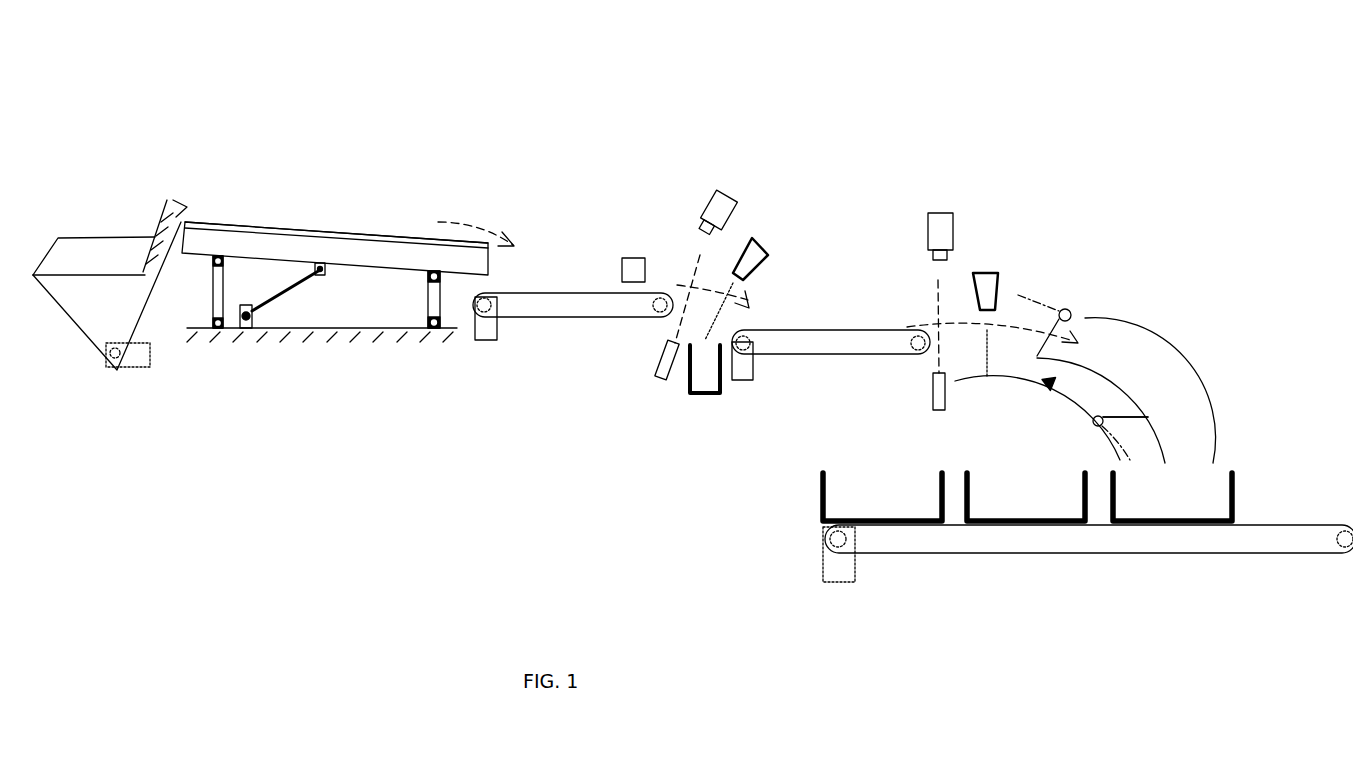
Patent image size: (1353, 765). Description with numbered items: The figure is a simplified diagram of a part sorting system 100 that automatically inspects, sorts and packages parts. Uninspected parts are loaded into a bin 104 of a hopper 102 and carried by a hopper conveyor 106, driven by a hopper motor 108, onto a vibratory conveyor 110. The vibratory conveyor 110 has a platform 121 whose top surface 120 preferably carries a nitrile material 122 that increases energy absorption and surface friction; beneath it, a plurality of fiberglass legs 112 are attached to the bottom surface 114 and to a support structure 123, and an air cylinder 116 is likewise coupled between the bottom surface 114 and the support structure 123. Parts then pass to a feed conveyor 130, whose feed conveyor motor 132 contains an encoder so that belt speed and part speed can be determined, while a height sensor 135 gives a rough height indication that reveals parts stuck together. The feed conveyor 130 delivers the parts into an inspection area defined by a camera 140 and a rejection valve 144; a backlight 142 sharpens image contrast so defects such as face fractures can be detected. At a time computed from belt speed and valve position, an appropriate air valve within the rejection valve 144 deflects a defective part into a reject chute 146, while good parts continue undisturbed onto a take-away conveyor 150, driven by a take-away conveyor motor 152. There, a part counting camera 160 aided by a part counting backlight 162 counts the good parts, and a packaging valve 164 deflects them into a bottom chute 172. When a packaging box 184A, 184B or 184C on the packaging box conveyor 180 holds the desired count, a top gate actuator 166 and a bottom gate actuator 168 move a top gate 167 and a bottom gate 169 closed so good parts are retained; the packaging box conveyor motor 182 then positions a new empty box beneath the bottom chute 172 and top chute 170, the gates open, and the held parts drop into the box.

The part sorting system 100 is at (846, 64).
The hopper 102 is at (108, 158).
The bin 104 is at (107, 232).
The hopper conveyor 106 is at (177, 212).
The hopper motor 108 is at (132, 367).
The vibratory conveyor 110 is at (250, 198).
The legs 112 is at (428, 322).
The bottom surface 114 is at (365, 273).
The air cylinder 116 is at (258, 303).
The top surface 120 is at (415, 237).
The platform 121 is at (203, 263).
The material 122 is at (365, 233).
The support structure 123 is at (247, 325).
The feed conveyor 130 is at (522, 282).
The feed conveyor motor 132 is at (480, 340).
The height sensor 135 is at (623, 257).
The camera 140 is at (720, 188).
The backlight 142 is at (662, 377).
The rejection valve 144 is at (757, 245).
The reject chute 146 is at (695, 393).
The take-away conveyor 150 is at (796, 317).
The take-away conveyor motor 152 is at (750, 380).
The part counting camera 160 is at (938, 210).
The part counting backlight 162 is at (940, 410).
The packaging valve 164 is at (987, 272).
The top gate actuator 166 is at (1065, 308).
The top gate 167 is at (1052, 312).
The bottom gate actuator 168 is at (1094, 421).
The bottom gate 169 is at (1125, 413).
The top chute 170 is at (1154, 357).
The bottom chute 172 is at (1049, 388).
The packaging box conveyor 180 is at (1033, 573).
The packaging box conveyor motor 182 is at (830, 582).
The packaging box 184A is at (1235, 477).
The packaging box 184B is at (970, 480).
The packaging box 184C is at (820, 477).